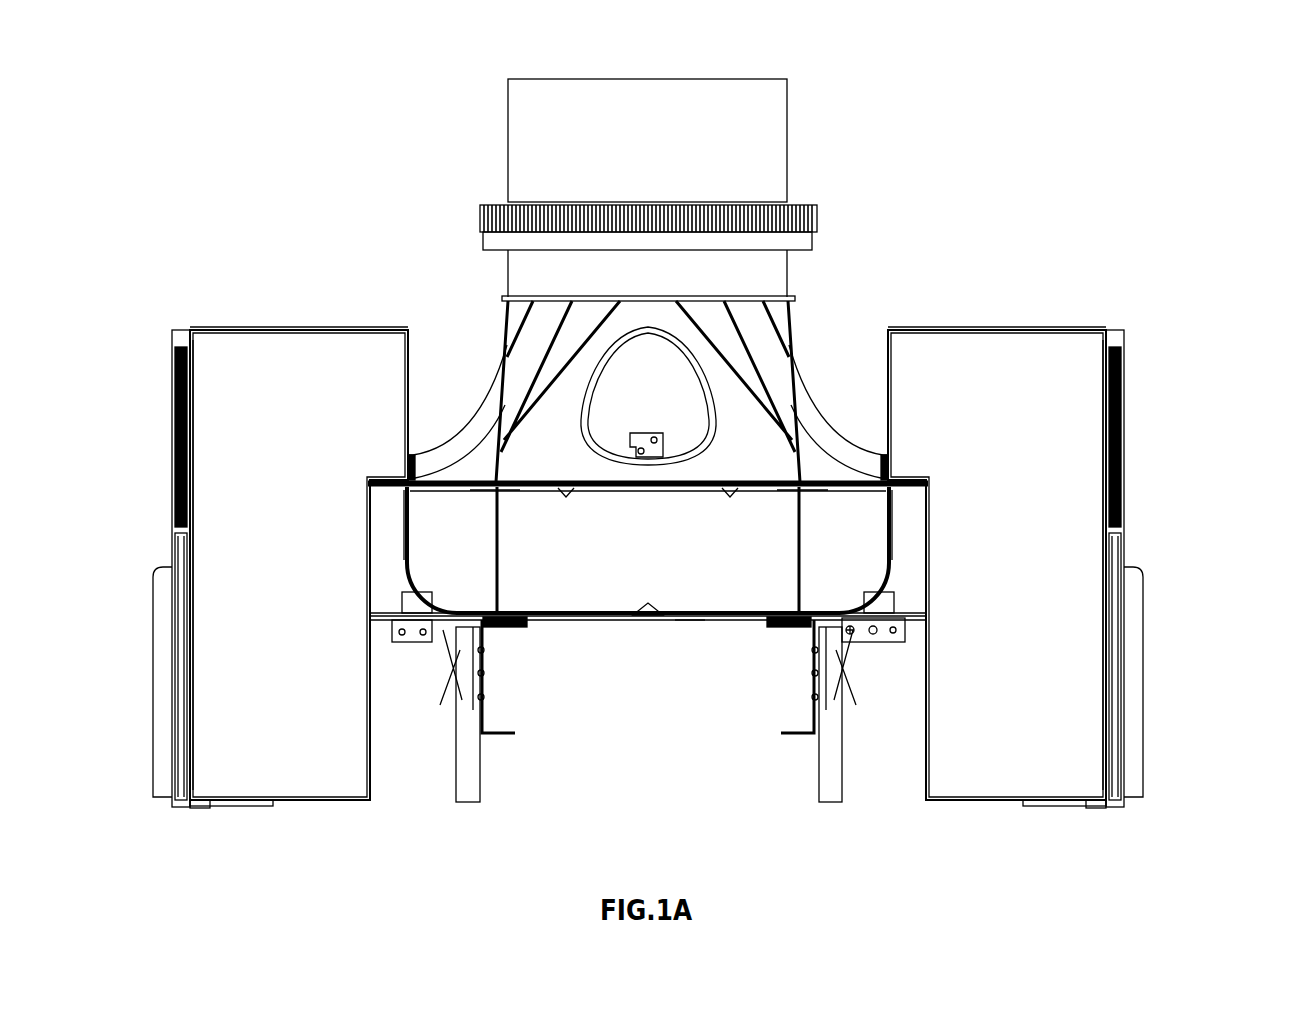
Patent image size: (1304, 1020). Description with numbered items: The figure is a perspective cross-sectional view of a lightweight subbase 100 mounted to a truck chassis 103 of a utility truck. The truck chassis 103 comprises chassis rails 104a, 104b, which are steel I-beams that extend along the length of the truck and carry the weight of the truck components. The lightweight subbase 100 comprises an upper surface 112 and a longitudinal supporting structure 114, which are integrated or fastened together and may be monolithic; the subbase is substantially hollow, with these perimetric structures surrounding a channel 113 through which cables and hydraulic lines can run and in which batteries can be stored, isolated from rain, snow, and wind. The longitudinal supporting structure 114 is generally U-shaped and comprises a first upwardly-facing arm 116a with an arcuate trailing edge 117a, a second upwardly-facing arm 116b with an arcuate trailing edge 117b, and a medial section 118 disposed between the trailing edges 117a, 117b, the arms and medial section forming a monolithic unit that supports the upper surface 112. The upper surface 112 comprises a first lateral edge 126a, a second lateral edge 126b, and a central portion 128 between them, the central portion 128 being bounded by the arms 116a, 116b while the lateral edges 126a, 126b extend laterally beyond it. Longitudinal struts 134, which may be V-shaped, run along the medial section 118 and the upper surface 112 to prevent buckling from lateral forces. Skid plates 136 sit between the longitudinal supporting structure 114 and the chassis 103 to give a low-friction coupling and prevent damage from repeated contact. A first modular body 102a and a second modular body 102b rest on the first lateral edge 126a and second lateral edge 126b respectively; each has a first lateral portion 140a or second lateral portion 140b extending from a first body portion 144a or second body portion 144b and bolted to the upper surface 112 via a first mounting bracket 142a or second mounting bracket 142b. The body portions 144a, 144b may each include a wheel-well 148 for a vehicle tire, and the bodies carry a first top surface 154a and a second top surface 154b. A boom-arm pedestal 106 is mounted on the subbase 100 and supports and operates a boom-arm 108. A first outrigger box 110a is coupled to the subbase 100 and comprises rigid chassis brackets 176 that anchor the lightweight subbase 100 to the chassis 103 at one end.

The lightweight subbase 100 is at (680, 470).
The first modular body 102a is at (146, 362).
The second modular body 102b is at (1162, 347).
The truck chassis 103 is at (749, 735).
The first chassis rail 104a is at (502, 737).
The second chassis rail 104b is at (792, 737).
The boom-arm pedestal 106 is at (793, 272).
The boom-arm 108 is at (679, 97).
The first outrigger box 110a is at (383, 595).
The upper surface 112 is at (537, 480).
The channel 113 is at (757, 590).
The longitudinal supporting structure 114 is at (392, 541).
The first upwardly-facing arm 116a is at (405, 505).
The second upwardly-facing arm 116b is at (891, 505).
The arcuate trailing edge 117a is at (427, 597).
The arcuate trailing edge 117b is at (869, 597).
The medial section 118 is at (690, 625).
The first lateral edge 126a is at (372, 458).
The second lateral edge 126b is at (924, 458).
The central portion 128 is at (626, 492).
The longitudinal struts 134 is at (567, 497).
The skid plates 136 is at (522, 625).
The first lateral portion 140a is at (387, 352).
The second lateral portion 140b is at (909, 352).
The first mounting bracket 142a is at (405, 463).
The second mounting bracket 142b is at (891, 463).
The first body portion 144a is at (215, 393).
The second body portion 144b is at (1081, 393).
The wheel-well 148 is at (158, 572).
The first top surface 154a is at (305, 325).
The second top surface 154b is at (991, 325).
The rigid chassis brackets 176 is at (455, 672).